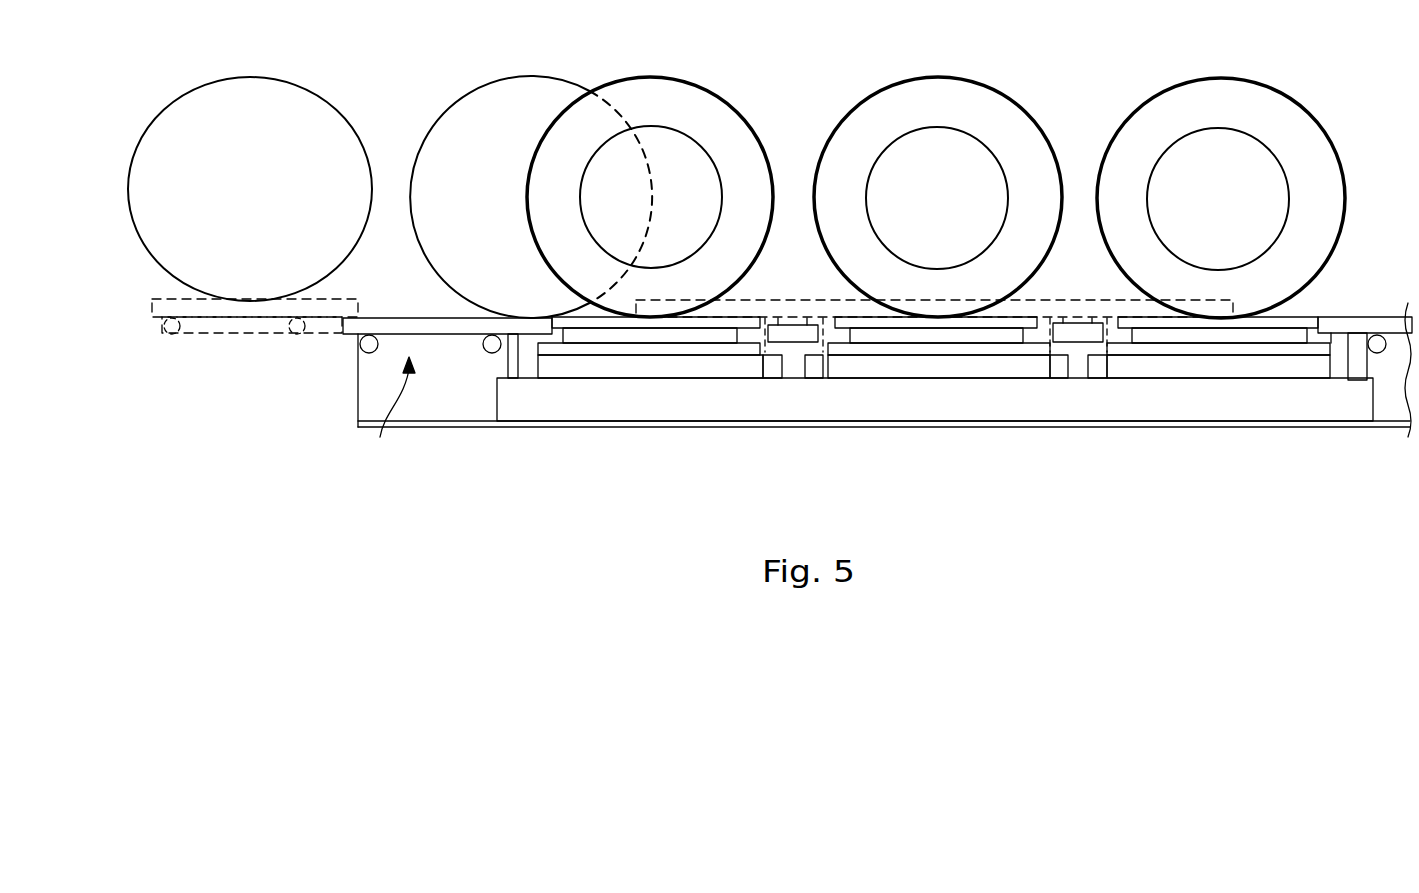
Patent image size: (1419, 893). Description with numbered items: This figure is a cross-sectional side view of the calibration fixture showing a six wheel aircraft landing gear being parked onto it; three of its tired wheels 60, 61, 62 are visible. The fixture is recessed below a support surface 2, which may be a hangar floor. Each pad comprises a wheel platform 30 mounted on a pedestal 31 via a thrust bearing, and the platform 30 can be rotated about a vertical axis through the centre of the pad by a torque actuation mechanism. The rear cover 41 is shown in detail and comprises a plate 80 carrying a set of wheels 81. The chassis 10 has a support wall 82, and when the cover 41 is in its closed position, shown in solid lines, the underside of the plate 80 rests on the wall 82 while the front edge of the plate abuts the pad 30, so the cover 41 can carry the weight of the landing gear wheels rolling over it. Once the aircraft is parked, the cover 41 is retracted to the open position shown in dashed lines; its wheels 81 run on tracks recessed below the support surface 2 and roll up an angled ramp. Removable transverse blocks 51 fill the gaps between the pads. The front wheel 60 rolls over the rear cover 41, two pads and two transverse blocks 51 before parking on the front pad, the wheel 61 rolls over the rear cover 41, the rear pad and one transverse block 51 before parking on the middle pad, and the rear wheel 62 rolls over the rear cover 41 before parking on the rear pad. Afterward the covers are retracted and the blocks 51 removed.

The support surface 2 is at (140, 318).
The chassis 10 is at (1262, 407).
The wheel platform 30 is at (608, 323).
The pedestal 31 is at (703, 355).
The rear cover 41 is at (387, 416).
The transverse block 51 is at (803, 320).
The front wheel 60 is at (1153, 96).
The wheel 61 is at (897, 85).
The rear wheel 62 is at (718, 94).
The plate 80 is at (410, 322).
The wheels 81 is at (366, 354).
The support wall 82 is at (521, 360).